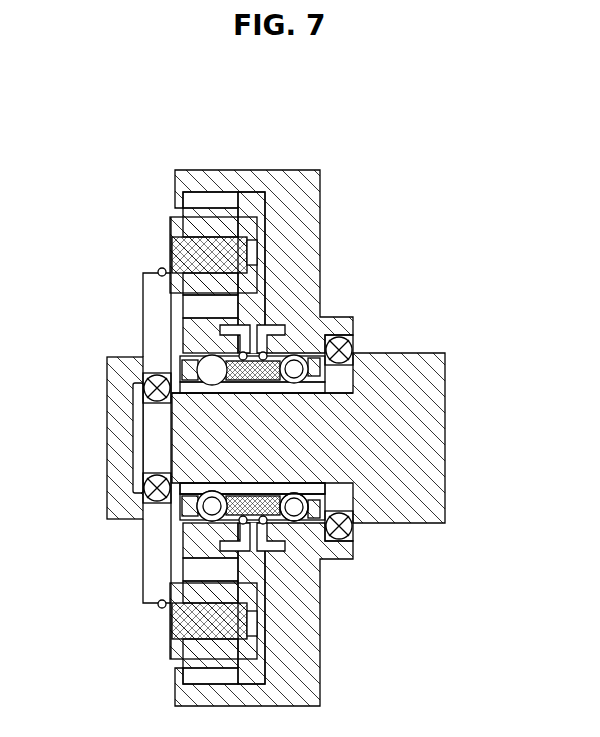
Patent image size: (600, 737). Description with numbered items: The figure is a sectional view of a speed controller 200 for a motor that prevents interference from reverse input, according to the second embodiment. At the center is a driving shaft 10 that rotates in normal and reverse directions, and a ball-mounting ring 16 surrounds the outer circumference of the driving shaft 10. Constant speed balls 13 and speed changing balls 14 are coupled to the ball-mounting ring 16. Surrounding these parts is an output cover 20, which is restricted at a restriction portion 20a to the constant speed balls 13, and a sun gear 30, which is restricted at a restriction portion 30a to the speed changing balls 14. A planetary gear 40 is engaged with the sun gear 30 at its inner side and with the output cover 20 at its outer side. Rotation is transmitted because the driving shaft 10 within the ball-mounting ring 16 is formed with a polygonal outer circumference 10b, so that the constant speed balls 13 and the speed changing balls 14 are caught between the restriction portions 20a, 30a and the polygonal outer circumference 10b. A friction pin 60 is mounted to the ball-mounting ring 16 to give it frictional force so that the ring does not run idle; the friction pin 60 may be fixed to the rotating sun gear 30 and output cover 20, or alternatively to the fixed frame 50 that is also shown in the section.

The speed controller 200 is at (270, 112).
The driving shaft 10 is at (443, 433).
The polygonal outer circumference 10b is at (253, 393).
The constant speed balls 13 is at (220, 527).
The speed changing balls 14 is at (293, 527).
The ball-mounting ring 16 is at (325, 373).
The output cover 20 is at (313, 192).
The restriction portion of output cover 20a is at (275, 495).
The sun gear 30 is at (190, 336).
The restriction portion of sun gear 30a is at (188, 490).
The planetary gear 40 is at (173, 255).
The fixed frame 50 is at (107, 500).
The friction pin 60 is at (268, 332).